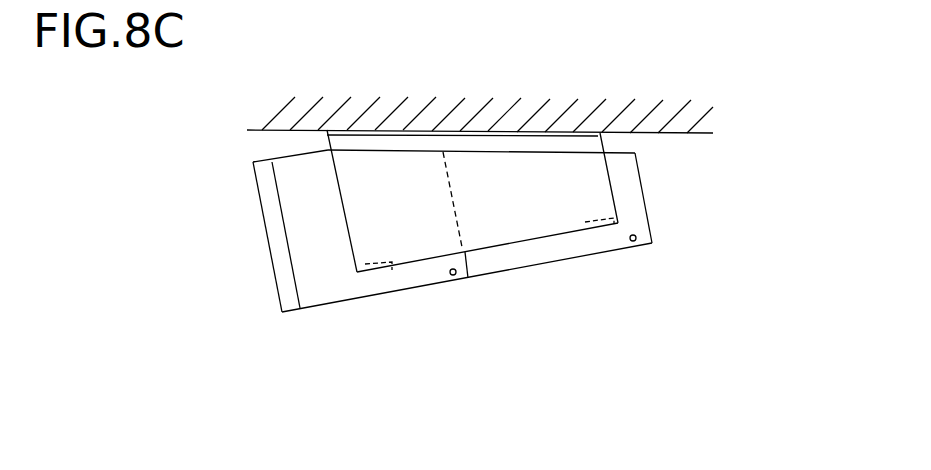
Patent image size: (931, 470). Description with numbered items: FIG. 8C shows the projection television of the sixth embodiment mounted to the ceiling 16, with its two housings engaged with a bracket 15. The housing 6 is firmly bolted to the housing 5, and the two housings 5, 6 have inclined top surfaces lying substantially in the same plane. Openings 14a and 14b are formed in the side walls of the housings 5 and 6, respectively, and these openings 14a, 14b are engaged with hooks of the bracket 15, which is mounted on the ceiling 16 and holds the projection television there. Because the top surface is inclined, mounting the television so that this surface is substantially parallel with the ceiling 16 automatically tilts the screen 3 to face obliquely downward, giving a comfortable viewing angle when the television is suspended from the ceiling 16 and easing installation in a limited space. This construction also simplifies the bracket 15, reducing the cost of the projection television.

The ceiling 16 is at (508, 97).
The housing 6 is at (655, 215).
The housing 5 is at (320, 310).
The screen 3 is at (258, 223).
The bracket 15 is at (523, 230).
The opening 14a is at (380, 268).
The opening 14b is at (609, 226).